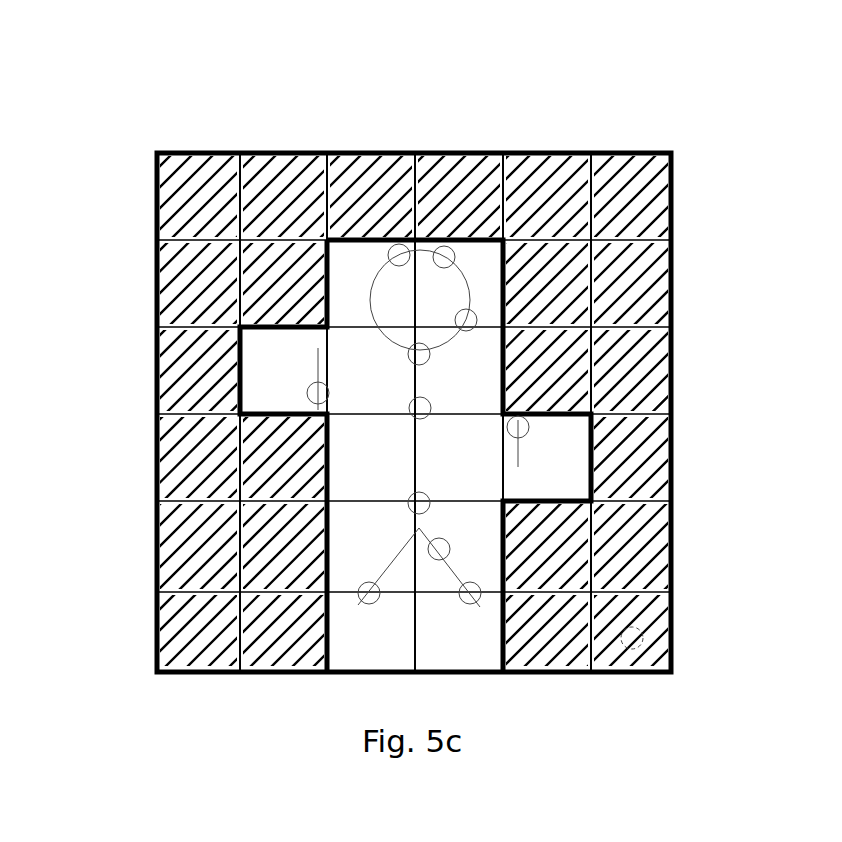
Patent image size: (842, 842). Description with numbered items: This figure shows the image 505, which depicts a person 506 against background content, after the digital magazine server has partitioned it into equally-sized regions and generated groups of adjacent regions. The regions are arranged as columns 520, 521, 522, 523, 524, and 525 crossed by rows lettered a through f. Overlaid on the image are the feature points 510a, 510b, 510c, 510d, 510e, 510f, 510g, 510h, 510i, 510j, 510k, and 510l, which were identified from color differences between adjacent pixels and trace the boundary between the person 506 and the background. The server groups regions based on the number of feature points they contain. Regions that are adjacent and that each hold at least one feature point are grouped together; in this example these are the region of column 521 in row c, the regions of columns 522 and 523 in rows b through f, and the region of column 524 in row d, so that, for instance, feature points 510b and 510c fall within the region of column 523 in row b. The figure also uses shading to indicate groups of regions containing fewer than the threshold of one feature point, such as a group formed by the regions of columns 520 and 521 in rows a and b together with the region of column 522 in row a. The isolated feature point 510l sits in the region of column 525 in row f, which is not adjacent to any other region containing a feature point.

The image 505 is at (242, 150).
The person 506 is at (368, 299).
The feature point 510a is at (400, 243).
The feature point 510b is at (446, 245).
The feature point 510c is at (478, 320).
The feature point 510d is at (431, 356).
The feature point 510e is at (530, 428).
The feature point 510f is at (306, 393).
The feature point 510g is at (420, 421).
The feature point 510h is at (407, 506).
The feature point 510i is at (451, 550).
The feature point 510j is at (483, 593).
The feature point 510k is at (357, 594).
The feature point 510l is at (645, 637).
The column 520 is at (198, 398).
The column 521 is at (283, 398).
The column 522 is at (371, 398).
The column 523 is at (459, 398).
The column 524 is at (547, 398).
The column 525 is at (631, 398).